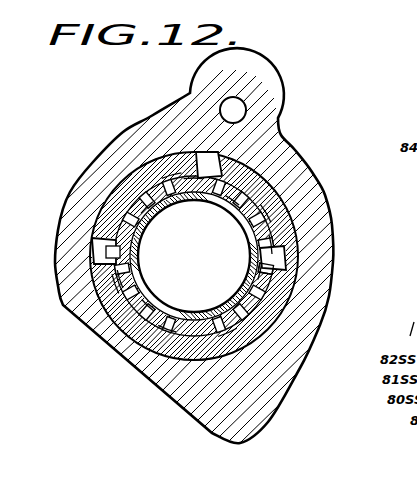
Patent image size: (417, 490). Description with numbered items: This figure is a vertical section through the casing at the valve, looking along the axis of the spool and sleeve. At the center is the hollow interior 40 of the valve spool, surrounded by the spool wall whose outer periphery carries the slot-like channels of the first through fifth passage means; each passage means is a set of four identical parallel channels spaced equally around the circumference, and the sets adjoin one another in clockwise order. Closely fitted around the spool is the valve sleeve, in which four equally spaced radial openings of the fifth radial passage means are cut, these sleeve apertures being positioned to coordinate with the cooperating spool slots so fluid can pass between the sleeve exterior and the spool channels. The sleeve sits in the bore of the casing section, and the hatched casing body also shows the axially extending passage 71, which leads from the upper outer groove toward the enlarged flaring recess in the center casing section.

The hollow interior 40 is at (177, 284).
The axially extending passage 71 is at (242, 101).